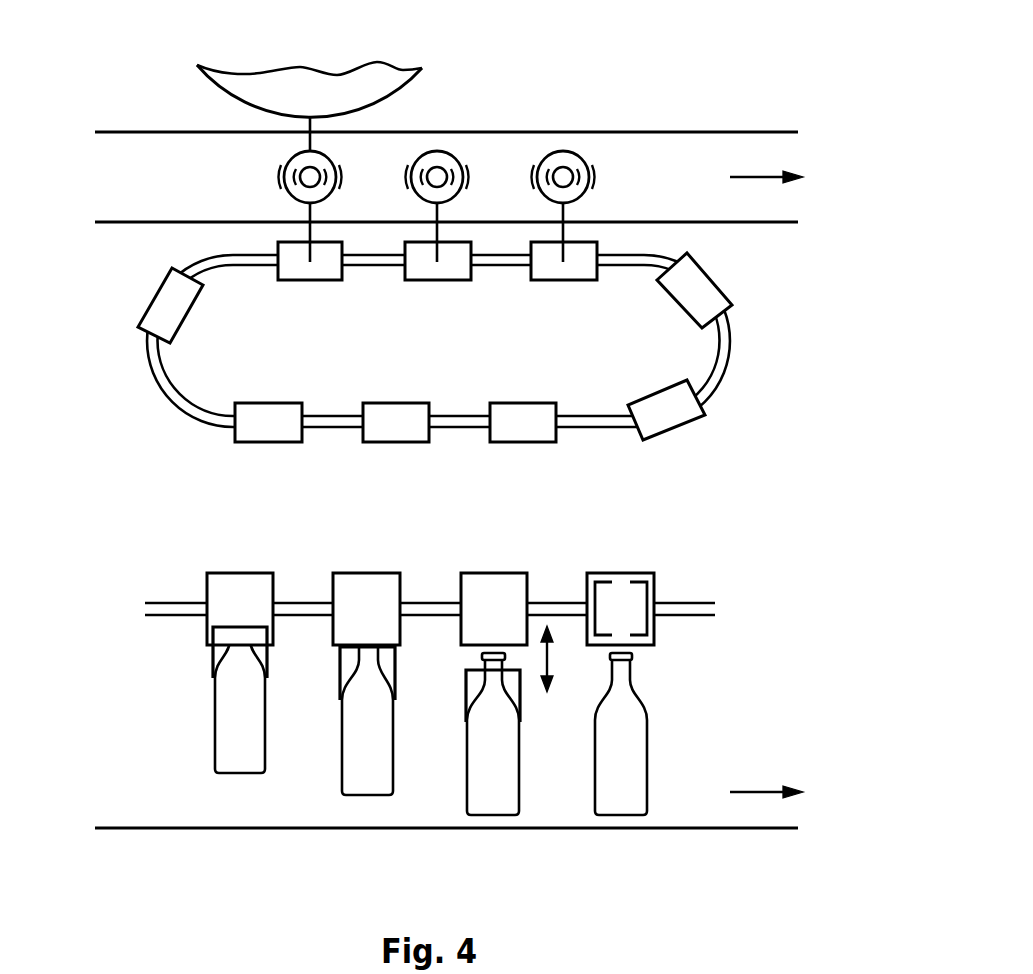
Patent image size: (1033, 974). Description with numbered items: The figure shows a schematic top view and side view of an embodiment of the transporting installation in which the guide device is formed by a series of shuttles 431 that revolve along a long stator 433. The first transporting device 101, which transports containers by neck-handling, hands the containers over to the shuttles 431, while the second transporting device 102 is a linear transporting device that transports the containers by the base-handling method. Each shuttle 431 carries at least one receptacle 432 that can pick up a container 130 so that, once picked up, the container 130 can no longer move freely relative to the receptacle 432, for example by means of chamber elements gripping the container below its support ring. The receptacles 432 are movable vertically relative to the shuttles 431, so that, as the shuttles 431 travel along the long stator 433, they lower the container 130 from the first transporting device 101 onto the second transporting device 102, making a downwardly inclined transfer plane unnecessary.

The first transporting device 101 is at (387, 70).
The second transporting device 102 is at (686, 143).
The container 130 is at (290, 158).
The shuttle 431 is at (323, 280).
The receptacle 432 is at (284, 188).
The long stator 433 is at (325, 429).